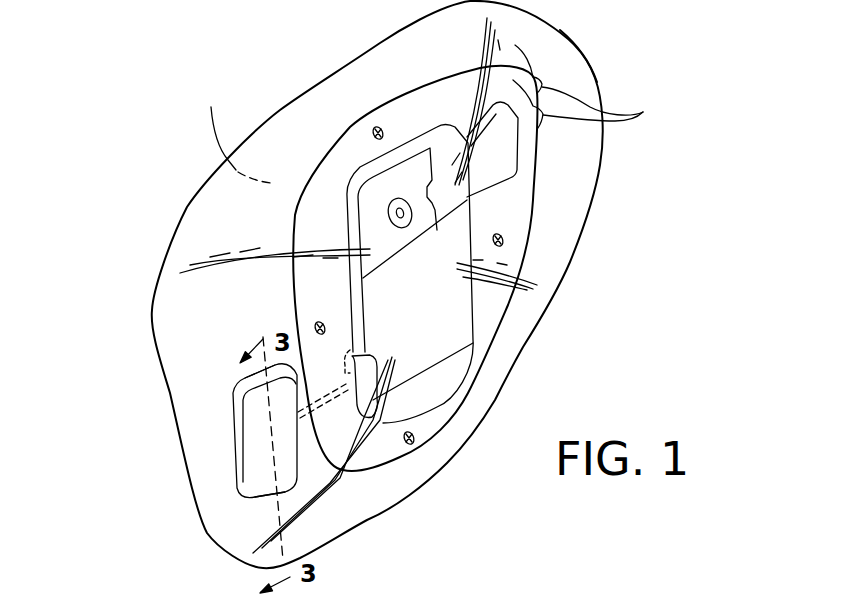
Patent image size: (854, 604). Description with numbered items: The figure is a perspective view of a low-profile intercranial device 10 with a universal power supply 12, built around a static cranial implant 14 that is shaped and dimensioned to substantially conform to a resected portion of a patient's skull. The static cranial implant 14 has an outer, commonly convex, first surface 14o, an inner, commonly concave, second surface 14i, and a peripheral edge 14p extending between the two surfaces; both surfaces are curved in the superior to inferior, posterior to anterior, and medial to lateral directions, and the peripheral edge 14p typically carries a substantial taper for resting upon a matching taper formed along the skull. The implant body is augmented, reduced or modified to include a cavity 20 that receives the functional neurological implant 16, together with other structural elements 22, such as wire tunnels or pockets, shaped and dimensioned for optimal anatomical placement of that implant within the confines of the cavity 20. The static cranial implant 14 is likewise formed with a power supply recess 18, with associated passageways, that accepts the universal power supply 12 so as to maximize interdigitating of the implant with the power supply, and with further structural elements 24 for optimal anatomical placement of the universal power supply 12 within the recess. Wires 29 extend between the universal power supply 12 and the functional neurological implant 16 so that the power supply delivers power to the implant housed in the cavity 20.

The low-profile intercranial device 10 is at (650, 188).
The universal power supply 12 is at (253, 455).
The static cranial implant 14 is at (313, 110).
The inner second surface 14i is at (232, 129).
The outer first surface 14o is at (557, 213).
The peripheral edge 14p is at (587, 54).
The functional neurological implant 16 is at (397, 287).
The power supply recess 18 is at (283, 483).
The cavity 20 is at (350, 222).
The structural elements 22 is at (598, 86).
The structural elements 24 is at (250, 392).
The wires 29 is at (387, 420).